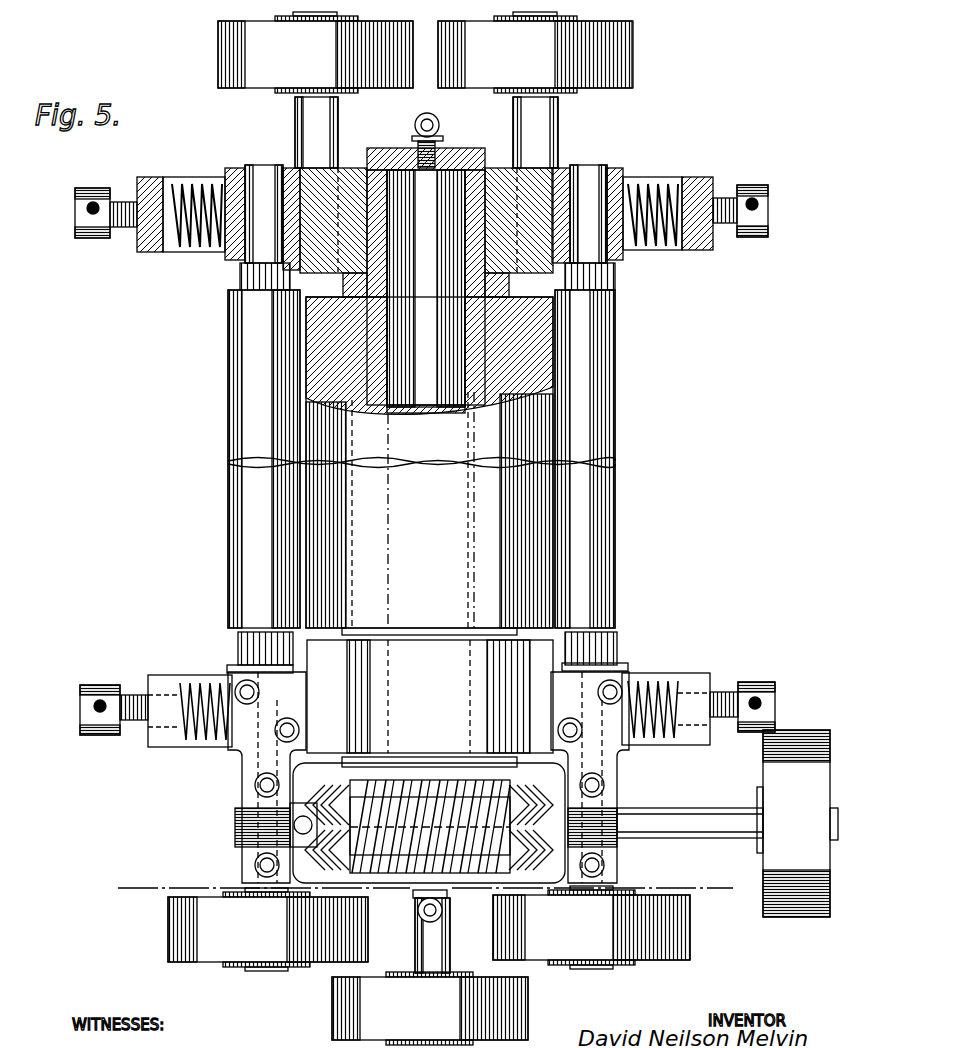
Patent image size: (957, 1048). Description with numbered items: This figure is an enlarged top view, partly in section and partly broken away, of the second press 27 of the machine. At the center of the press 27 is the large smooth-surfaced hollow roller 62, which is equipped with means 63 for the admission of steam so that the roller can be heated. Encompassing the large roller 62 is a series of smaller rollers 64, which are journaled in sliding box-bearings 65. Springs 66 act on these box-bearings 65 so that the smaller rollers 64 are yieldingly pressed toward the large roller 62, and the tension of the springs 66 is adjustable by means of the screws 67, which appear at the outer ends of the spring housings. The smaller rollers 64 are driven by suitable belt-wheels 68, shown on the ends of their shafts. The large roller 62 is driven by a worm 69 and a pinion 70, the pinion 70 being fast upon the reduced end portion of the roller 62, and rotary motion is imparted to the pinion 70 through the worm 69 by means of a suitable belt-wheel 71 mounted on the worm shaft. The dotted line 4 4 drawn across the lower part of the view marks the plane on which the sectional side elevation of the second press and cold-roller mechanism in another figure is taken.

The dotted line 4 4 is at (422, 886).
The press 27 is at (402, 448).
The large smooth-surfaced hollow roller 62 is at (429, 388).
The means for the admission of steam 63 is at (437, 128).
The encompassing smaller rollers 64 is at (421, 459).
The sliding box-bearings 65 is at (228, 262).
The springs 66 is at (186, 252).
The screws 67 is at (753, 682).
The belt-wheels 68 is at (429, 528).
The worm 69 is at (484, 808).
The pinion 70 is at (318, 872).
The belt-wheel 71 is at (727, 823).